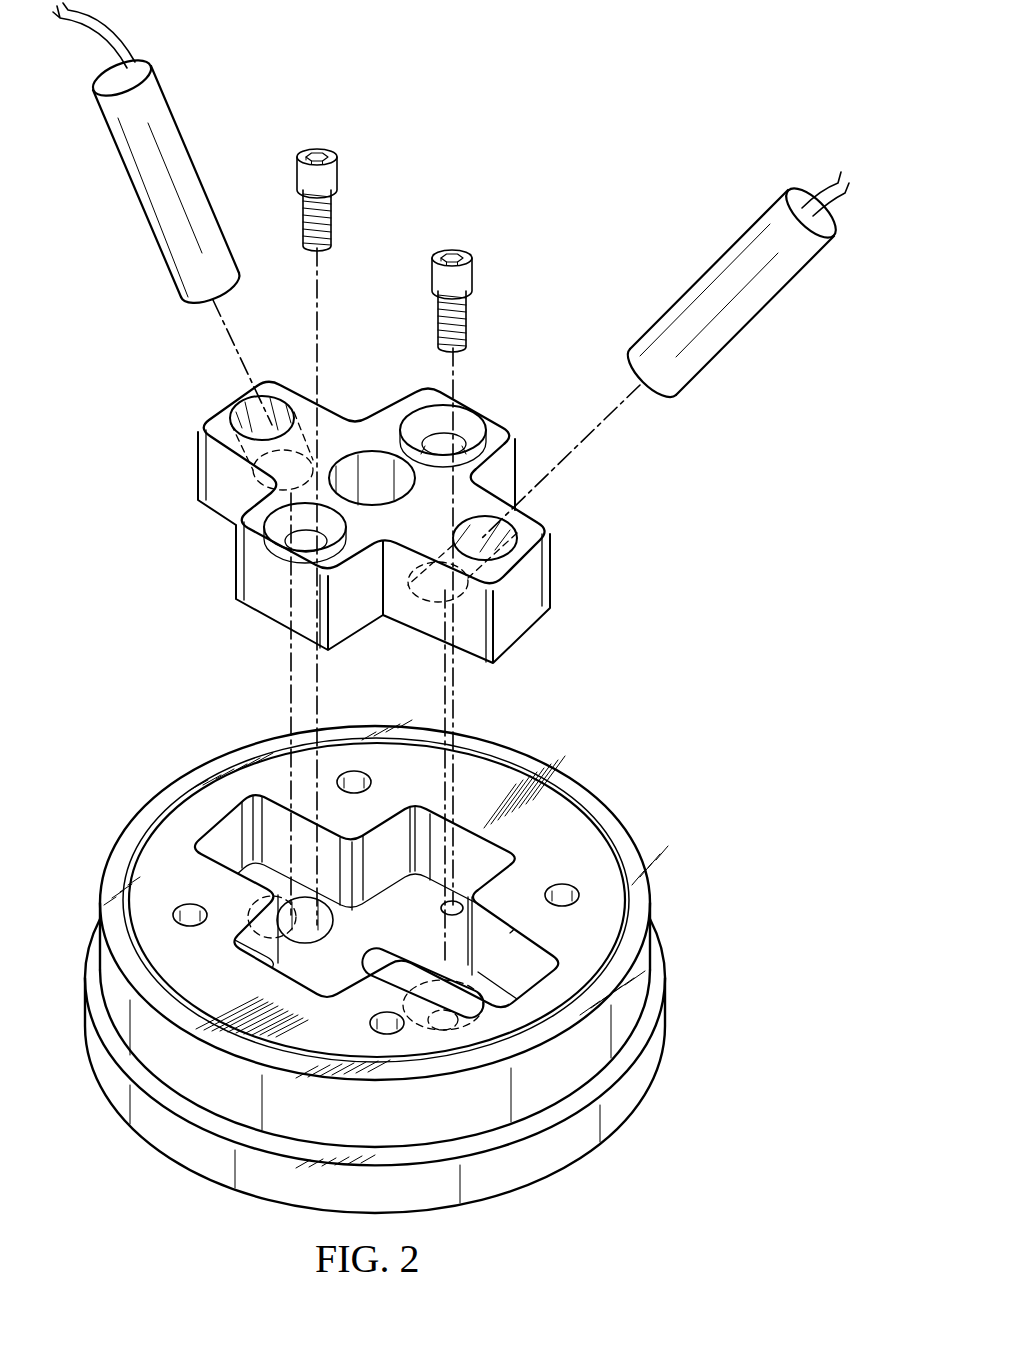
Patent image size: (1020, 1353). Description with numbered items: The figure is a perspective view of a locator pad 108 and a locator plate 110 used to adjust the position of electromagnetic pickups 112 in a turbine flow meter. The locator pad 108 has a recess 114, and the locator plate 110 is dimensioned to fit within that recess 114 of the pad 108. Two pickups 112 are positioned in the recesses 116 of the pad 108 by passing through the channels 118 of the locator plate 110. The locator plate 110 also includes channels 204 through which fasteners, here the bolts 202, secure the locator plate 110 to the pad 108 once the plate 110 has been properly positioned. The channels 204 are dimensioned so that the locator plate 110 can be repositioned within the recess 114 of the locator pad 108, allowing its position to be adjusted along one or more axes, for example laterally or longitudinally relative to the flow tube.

The locator pad 108 is at (538, 1192).
The locator plate 110 is at (190, 459).
The electromagnetic pickup 112 is at (206, 117).
The recess 114 is at (215, 848).
The recess 116 is at (317, 925).
The channel 118 is at (283, 403).
The bolt 202 is at (297, 163).
The channel 204 is at (418, 410).